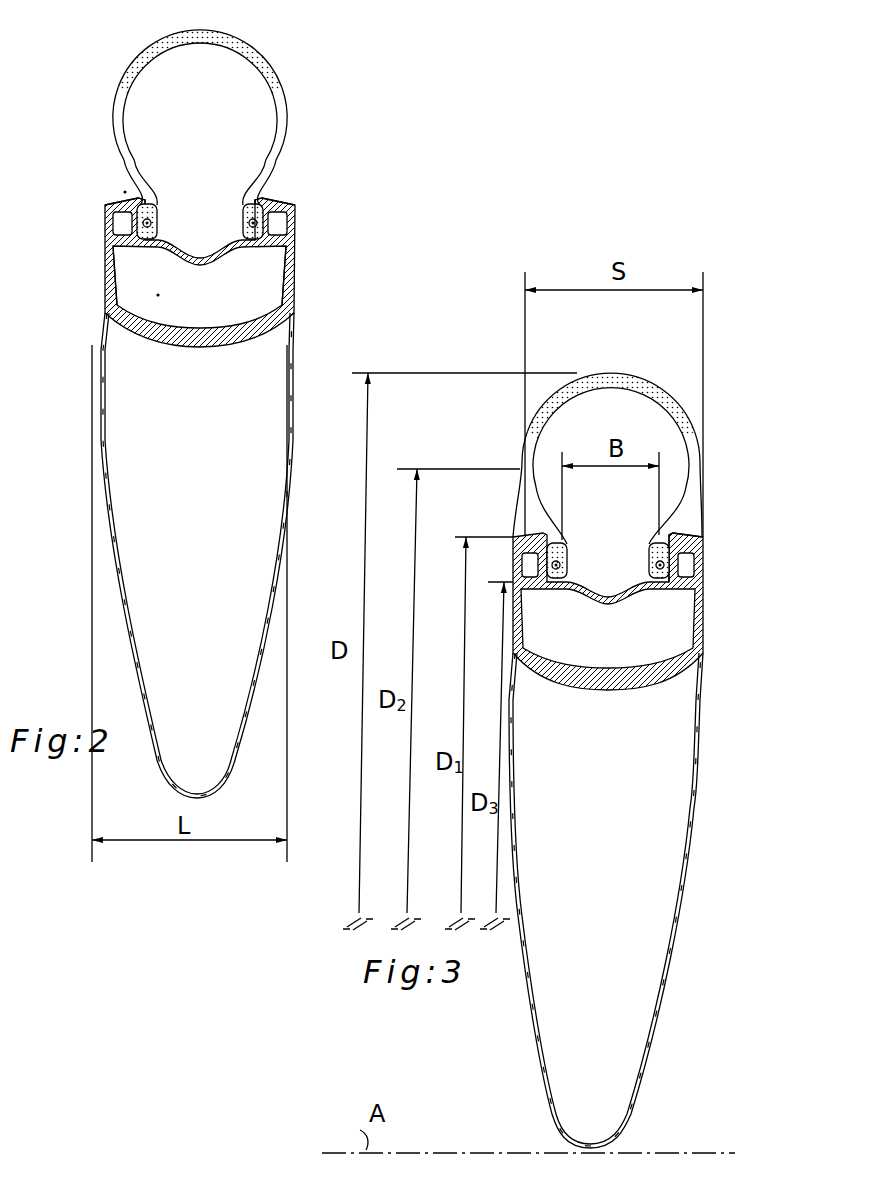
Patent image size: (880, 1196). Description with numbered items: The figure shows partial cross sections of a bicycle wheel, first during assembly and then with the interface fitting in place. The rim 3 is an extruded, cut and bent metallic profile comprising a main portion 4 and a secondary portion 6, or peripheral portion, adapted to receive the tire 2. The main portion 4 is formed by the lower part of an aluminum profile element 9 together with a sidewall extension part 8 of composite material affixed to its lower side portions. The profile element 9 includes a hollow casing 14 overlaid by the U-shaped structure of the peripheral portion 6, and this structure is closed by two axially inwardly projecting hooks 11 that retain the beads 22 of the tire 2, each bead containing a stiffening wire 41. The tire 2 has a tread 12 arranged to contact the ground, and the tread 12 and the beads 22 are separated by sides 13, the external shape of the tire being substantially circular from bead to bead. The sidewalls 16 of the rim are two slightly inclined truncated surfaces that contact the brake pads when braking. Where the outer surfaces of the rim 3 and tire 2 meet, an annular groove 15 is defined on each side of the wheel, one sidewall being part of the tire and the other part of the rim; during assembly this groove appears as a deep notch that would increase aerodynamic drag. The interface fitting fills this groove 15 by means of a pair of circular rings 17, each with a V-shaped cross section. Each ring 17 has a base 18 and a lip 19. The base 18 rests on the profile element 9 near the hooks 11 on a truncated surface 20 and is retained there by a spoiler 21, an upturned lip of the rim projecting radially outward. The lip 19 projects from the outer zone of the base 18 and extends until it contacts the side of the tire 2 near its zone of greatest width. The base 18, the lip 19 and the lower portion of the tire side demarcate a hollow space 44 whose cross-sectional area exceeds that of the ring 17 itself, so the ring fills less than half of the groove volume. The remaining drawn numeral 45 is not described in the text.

In FIG. 2, the tire 2 is at (270, 72).
In FIG. 2, the rim 3 is at (390, 170).
In FIG. 2, the main portion 4 is at (352, 215).
In FIG. 2, the secondary portion 6 is at (294, 222).
In FIG. 2, the sidewall extension part 8 is at (295, 298).
In FIG. 2, the profile element 9 is at (294, 260).
In FIG. 2, the hooks 11 is at (262, 210).
In FIG. 2, the tread 12 is at (175, 40).
In FIG. 2, the sides 13 is at (114, 127).
In FIG. 2, the hollow casing 14 is at (158, 295).
In FIG. 2, the annular groove 15 is at (125, 192).
In FIG. 2, the sidewalls 16 is at (103, 267).
In FIG. 2, the truncated surface 20 is at (270, 210).
In FIG. 2, the spoiler 21 is at (104, 201).
In FIG. 2, the beads 22 is at (280, 210).
In FIG. 2, the stiffening wire 41 is at (143, 223).
In FIG. 3, the circular rings 17 is at (738, 480).
In FIG. 3, the base 18 is at (697, 537).
In FIG. 3, the lip 19 is at (690, 518).
In FIG. 3, the hollow space 44 is at (700, 515).
In FIG. 3, the bead portion 45 is at (774, 442).